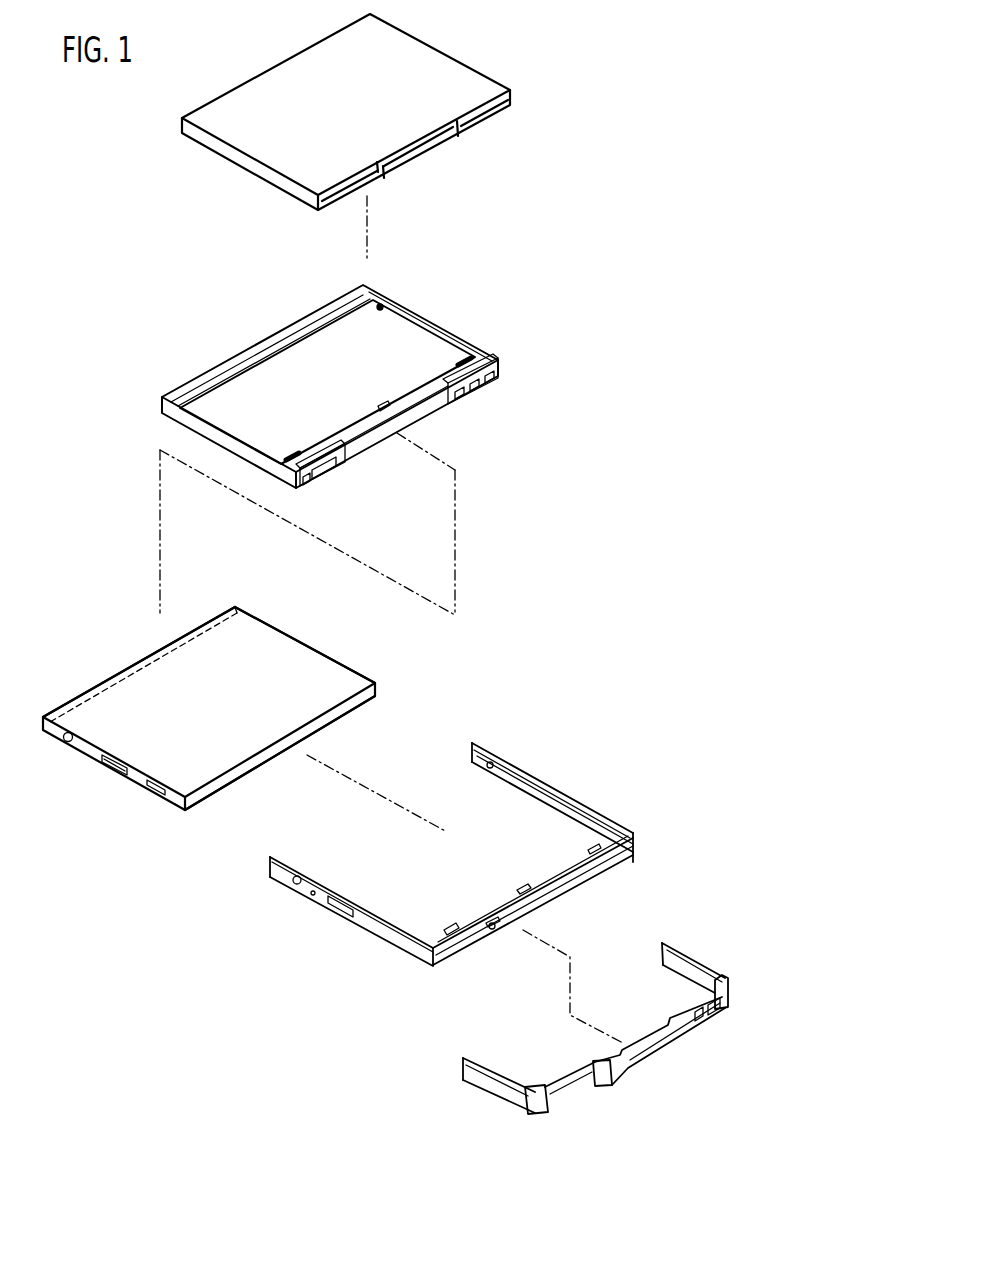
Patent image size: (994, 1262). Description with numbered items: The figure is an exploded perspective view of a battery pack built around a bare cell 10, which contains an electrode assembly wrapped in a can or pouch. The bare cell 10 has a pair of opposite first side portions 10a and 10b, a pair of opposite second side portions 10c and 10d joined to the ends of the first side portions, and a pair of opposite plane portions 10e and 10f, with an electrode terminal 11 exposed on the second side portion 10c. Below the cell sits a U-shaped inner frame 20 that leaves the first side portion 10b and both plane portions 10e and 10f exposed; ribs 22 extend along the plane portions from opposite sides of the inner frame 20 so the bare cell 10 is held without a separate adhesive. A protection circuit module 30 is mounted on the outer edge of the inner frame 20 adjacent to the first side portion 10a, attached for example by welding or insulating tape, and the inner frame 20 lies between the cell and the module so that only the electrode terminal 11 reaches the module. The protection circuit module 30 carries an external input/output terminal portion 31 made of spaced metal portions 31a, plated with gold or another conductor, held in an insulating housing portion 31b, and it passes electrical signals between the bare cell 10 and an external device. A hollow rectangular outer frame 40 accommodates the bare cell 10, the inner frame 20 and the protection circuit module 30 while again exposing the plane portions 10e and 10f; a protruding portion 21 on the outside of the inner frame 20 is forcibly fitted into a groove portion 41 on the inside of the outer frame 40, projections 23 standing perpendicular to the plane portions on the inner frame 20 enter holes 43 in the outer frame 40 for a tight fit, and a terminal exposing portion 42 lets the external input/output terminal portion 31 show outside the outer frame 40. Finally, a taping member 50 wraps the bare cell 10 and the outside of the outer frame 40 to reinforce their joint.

The bare cell 10 is at (225, 578).
The first side portion 10a is at (330, 718).
The first side portion 10b is at (93, 693).
The second side portion 10c is at (142, 777).
The second side portion 10d is at (310, 645).
The plane portion 10e is at (180, 673).
The plane portion 10f is at (170, 807).
The electrode terminal 11 is at (108, 770).
The inner frame 20 is at (630, 730).
The protruding portion 21 is at (493, 758).
The rib 22 is at (560, 795).
The projection 23 is at (450, 927).
The protection circuit module 30 is at (762, 902).
The external input/output terminal portion 31 is at (642, 1028).
The metal portion 31a is at (720, 997).
The housing portion 31b is at (740, 1022).
The outer frame 40 is at (484, 272).
The groove portion 41 is at (383, 317).
The terminal exposing portion 42 is at (465, 391).
The hole 43 is at (385, 405).
The taping member 50 is at (450, 72).